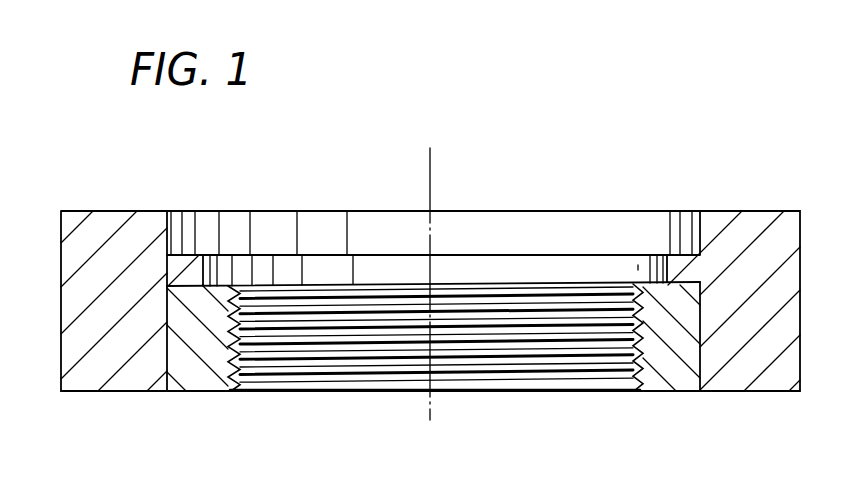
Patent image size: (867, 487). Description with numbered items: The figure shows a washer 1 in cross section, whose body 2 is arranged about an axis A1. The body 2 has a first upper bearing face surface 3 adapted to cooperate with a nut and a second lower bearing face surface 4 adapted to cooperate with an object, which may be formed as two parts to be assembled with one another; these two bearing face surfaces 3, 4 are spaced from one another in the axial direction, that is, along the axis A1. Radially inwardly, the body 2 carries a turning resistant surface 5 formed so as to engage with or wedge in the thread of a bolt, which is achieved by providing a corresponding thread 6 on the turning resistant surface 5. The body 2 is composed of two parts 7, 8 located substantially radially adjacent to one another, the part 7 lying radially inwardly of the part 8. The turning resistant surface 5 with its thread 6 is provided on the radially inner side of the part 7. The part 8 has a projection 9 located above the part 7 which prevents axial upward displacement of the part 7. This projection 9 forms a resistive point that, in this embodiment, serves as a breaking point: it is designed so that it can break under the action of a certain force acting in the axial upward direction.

The washer 1 is at (53, 194).
The body 2 is at (809, 214).
The first upper bearing face surface 3 is at (725, 211).
The projection 9 is at (675, 258).
The part 8 is at (793, 353).
The second lower bearing face surface 4 is at (762, 393).
The part 7 is at (672, 378).
The turning resistant surface 5 is at (620, 362).
The thread 6 is at (262, 395).
The axis A1 is at (430, 182).